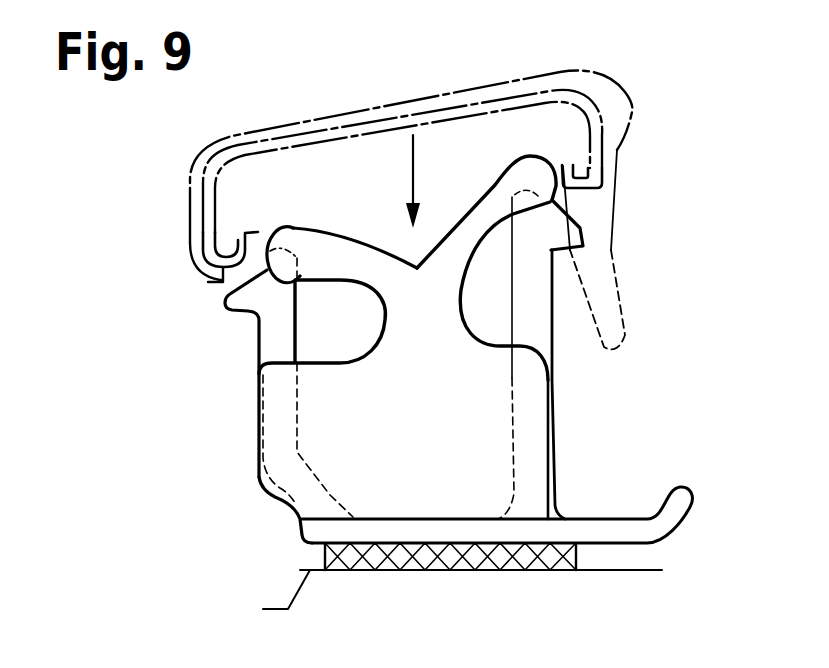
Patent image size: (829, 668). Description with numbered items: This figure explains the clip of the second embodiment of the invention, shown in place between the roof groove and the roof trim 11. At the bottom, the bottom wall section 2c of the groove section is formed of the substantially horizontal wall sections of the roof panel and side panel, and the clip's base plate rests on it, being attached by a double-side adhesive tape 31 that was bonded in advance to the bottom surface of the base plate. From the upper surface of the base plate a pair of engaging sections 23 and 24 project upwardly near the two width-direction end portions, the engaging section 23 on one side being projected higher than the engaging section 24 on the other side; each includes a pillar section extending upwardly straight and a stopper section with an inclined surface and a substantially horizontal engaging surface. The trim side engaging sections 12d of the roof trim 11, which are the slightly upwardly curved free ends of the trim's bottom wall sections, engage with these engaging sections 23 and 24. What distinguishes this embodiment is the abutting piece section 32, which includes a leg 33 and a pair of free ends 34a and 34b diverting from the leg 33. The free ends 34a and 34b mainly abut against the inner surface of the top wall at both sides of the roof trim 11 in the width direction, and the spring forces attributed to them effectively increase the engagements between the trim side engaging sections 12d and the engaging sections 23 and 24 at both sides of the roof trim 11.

The roof trim 11 is at (411, 100).
The trim side engaging section 12d is at (250, 233).
The engaging section 23 is at (530, 288).
The engaging section 24 is at (273, 332).
The bottom wall section 2c is at (595, 558).
The double-side adhesive tape 31 is at (453, 558).
The abutting piece section 32 is at (246, 481).
The leg 33 is at (477, 437).
The free end 34a is at (483, 212).
The free end 34b is at (313, 243).